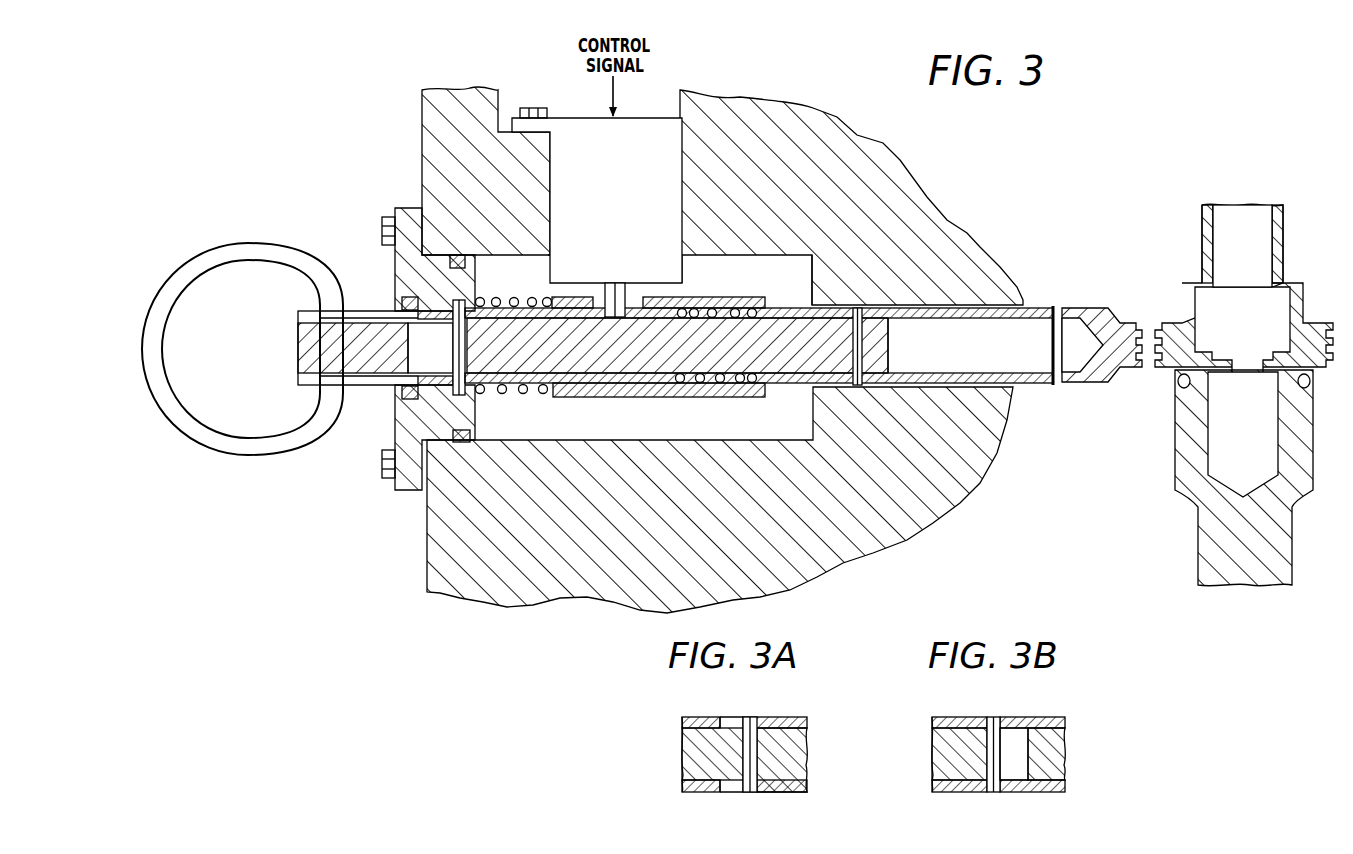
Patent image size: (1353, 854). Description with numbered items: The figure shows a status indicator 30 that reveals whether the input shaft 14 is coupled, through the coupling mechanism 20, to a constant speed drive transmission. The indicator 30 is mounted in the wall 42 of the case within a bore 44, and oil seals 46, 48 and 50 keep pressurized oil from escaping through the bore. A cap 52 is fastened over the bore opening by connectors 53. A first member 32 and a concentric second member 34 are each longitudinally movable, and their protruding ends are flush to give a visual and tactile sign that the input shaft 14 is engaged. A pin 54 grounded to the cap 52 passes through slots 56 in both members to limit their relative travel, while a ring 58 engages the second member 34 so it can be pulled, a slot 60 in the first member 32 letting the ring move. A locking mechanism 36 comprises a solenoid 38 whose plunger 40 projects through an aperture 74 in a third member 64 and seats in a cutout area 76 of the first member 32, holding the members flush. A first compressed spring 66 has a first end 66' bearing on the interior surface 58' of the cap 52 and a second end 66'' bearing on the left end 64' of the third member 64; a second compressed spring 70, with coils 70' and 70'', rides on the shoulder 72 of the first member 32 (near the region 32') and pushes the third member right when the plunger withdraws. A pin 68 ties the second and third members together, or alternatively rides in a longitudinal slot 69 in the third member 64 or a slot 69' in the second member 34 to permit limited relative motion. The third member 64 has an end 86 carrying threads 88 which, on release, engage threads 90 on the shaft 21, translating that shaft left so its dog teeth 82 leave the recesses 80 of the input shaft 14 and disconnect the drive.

In FIG. 3, the input shaft 14 is at (1205, 547).
In FIG. 3, the coupling mechanism 20 is at (1127, 425).
In FIG. 3, the shaft 21 is at (1205, 236).
In FIG. 3, the status indicator 30 is at (372, 140).
In FIG. 3, the first member 32 is at (289, 333).
In FIG. 3, the rod shoulder 32' is at (681, 415).
In FIG. 3, the second member 34 is at (298, 350).
In FIG. 3A, the second member 34 is at (685, 753).
In FIG. 3B, the second member 34 is at (935, 753).
In FIG. 3, the locking mechanism 36 is at (700, 168).
In FIG. 3, the solenoid 38 is at (626, 210).
In FIG. 3, the plunger 40 is at (604, 298).
In FIG. 3, the wall 42 is at (667, 534).
In FIG. 3, the bore 44 is at (768, 258).
In FIG. 3, the oil seal 46 is at (457, 262).
In FIG. 3, the oil seal 48 is at (405, 298).
In FIG. 3, the oil seal 50 is at (545, 331).
In FIG. 3, the cap 52 is at (428, 258).
In FIG. 3, the connectors 53 is at (386, 232).
In FIG. 3, the pin 54 is at (468, 330).
In FIG. 3, the slots 56 is at (455, 380).
In FIG. 3, the ring 58 is at (242, 337).
In FIG. 3, the interior surface 58' is at (470, 458).
In FIG. 3, the slot 60 is at (366, 392).
In FIG. 3, the third member 64 is at (759, 368).
In FIG. 3A, the third member 64 is at (726, 735).
In FIG. 3B, the third member 64 is at (998, 735).
In FIG. 3, the left end 64' is at (605, 419).
In FIG. 3, the first compressed spring 66 is at (519, 409).
In FIG. 3, the first end 66' is at (481, 252).
In FIG. 3, the second end 66'' is at (554, 411).
In FIG. 3, the pin 68 is at (862, 346).
In FIG. 3A, the pin 68 is at (760, 753).
In FIG. 3B, the pin 68 is at (1000, 745).
In FIG. 3A, the longitudinal slot 69 is at (722, 735).
In FIG. 3B, the slot 69' is at (1058, 754).
In FIG. 3, the second compressed spring 70 is at (616, 327).
In FIG. 3, the spring coil 70' is at (702, 285).
In FIG. 3, the spring coil 70'' is at (781, 285).
In FIG. 3, the shoulder 72 is at (773, 390).
In FIG. 3, the aperture 74 is at (626, 298).
In FIG. 3, the cutout area 76 is at (624, 320).
In FIG. 3, the recess 80 is at (1178, 382).
In FIG. 3, the dog teeth 82 is at (1247, 378).
In FIG. 3, the end 86 is at (1108, 300).
In FIG. 3, the threads 88 is at (1138, 326).
In FIG. 3, the threads 90 is at (1147, 365).